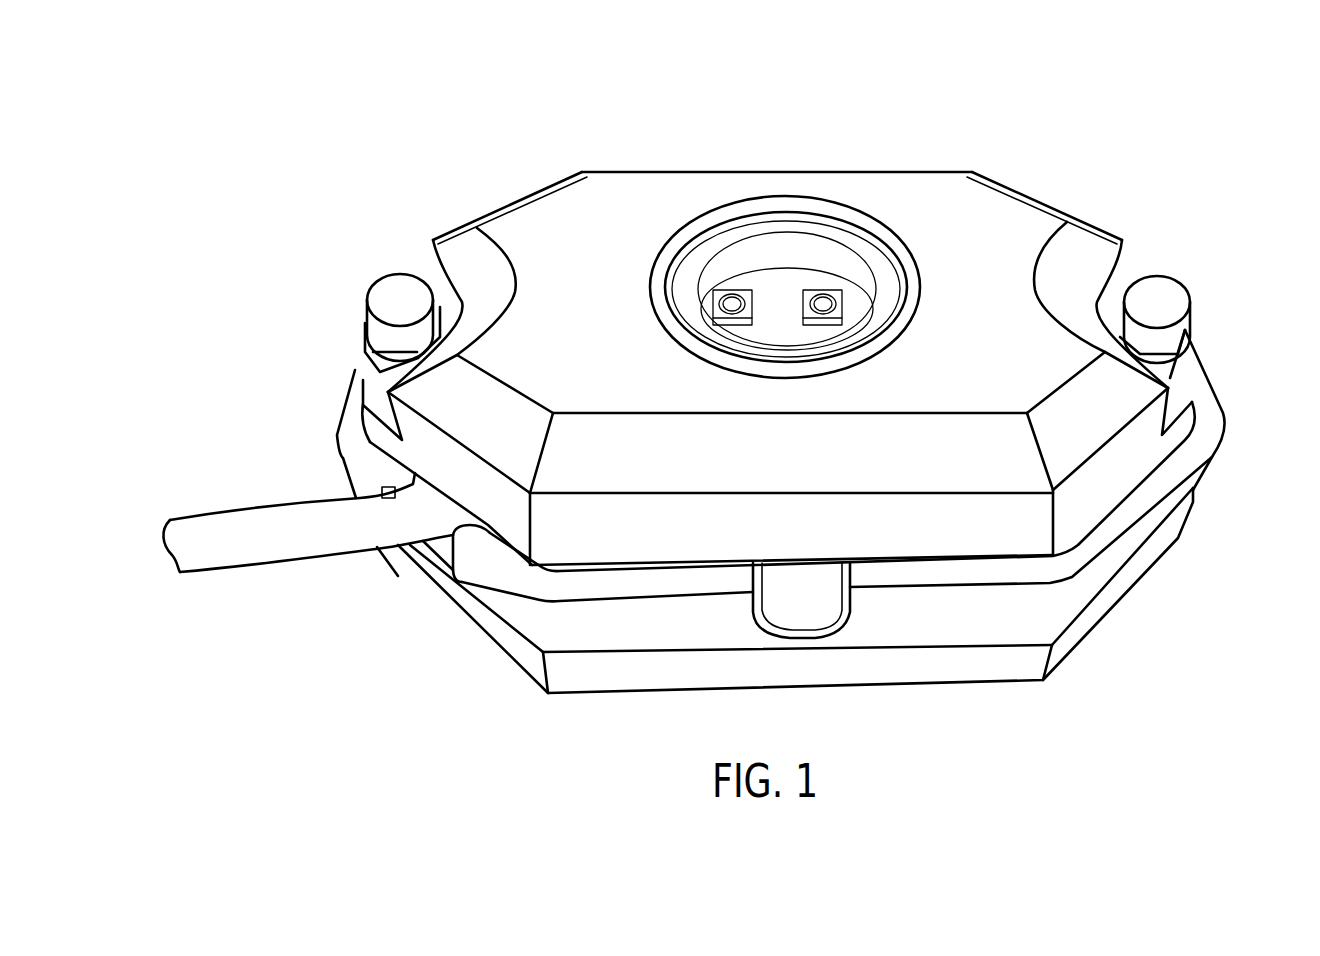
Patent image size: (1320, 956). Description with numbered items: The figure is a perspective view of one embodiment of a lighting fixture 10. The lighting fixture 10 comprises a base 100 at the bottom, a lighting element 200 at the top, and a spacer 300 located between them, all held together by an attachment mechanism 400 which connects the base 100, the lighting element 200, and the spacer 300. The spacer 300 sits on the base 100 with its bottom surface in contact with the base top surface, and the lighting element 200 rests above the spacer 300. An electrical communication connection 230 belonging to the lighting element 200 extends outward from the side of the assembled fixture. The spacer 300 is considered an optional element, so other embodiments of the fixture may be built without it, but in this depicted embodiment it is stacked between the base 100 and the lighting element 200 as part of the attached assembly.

The lighting fixture 10 is at (312, 147).
The base 100 is at (1093, 613).
The lighting element 200 is at (910, 196).
The electrical communication connection 230 is at (259, 533).
The spacer 300 is at (525, 617).
The attachment mechanism 400 is at (393, 292).